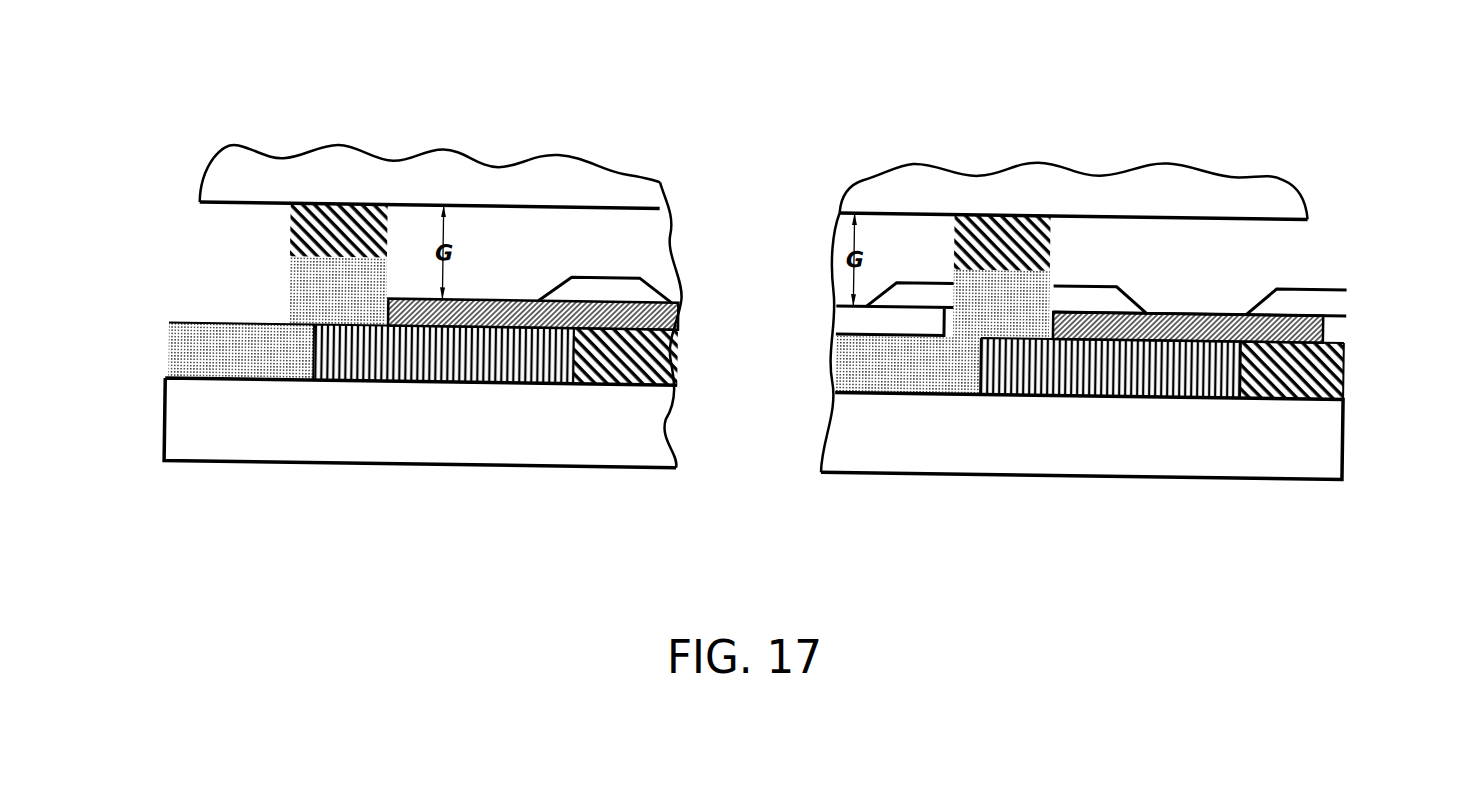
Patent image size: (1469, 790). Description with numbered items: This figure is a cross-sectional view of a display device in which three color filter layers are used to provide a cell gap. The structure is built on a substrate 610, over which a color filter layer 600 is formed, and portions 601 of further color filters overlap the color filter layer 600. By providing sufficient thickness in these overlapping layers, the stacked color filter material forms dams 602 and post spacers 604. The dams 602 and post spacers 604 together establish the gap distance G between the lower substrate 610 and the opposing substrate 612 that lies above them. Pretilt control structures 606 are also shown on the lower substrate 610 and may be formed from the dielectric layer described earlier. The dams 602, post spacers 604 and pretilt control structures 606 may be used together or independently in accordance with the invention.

The color filter layer 600 is at (158, 352).
The portions of color filters 601 is at (298, 301).
The dam 602 is at (284, 242).
The post spacer 604 is at (1060, 242).
The pretilt control structure 606 is at (603, 283).
The substrate 610 is at (305, 452).
The substrate 612 is at (281, 165).